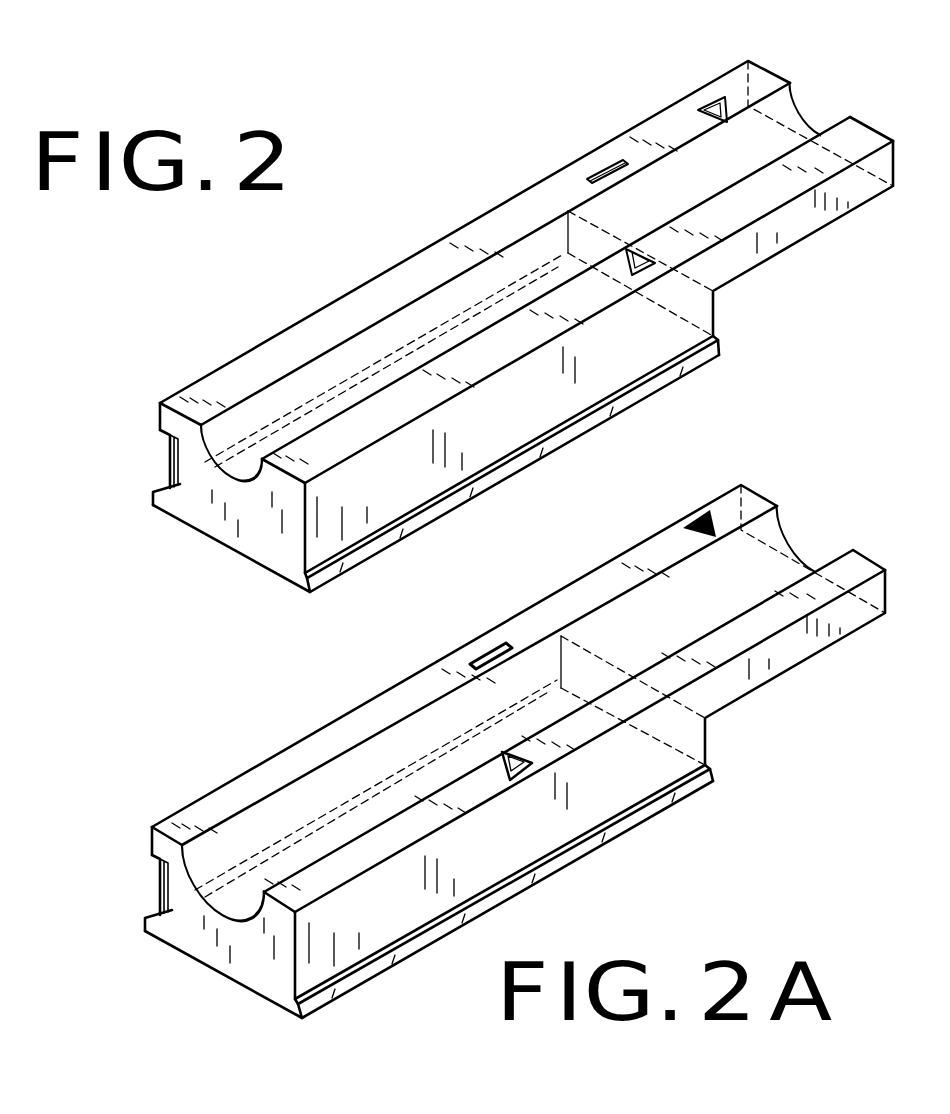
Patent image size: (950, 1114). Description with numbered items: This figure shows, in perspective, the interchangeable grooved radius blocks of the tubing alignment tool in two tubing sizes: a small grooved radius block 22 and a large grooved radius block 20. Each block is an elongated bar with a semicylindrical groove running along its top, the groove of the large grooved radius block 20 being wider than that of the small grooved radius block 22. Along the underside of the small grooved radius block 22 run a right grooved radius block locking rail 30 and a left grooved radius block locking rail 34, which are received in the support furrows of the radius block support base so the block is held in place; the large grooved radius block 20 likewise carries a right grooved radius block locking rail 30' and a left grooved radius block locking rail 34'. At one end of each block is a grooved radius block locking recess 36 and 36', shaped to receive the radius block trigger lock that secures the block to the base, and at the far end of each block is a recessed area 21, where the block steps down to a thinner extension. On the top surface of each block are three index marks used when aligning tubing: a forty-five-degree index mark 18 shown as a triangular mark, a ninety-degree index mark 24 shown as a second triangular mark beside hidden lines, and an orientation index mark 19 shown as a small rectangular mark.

In FIG. 2, the 45-degree index mark 18 is at (702, 100).
In FIG. 2A, the 45-degree index mark 18 is at (700, 518).
In FIG. 2, the orientation index mark 19 is at (614, 160).
In FIG. 2A, the orientation index mark 19 is at (486, 644).
In FIG. 2A, the large grooved radius block 20 is at (796, 560).
In FIG. 2, the recessed area 21 is at (802, 243).
In FIG. 2A, the recessed area 21 is at (818, 650).
In FIG. 2, the small grooved radius block 22 is at (804, 131).
In FIG. 2, the 90-degree index mark 24 is at (643, 268).
In FIG. 2A, the 90-degree index mark 24 is at (575, 750).
In FIG. 2, the right grooved radius block locking rail 30 is at (436, 503).
In FIG. 2A, the right grooved radius block locking rail 30' is at (429, 919).
In FIG. 2, the left grooved radius block locking rail 34 is at (110, 500).
In FIG. 2A, the left grooved radius block locking rail 34' is at (93, 935).
In FIG. 2, the radius block locking recess 36 is at (123, 440).
In FIG. 2A, the grooved radius block locking recess 36' is at (106, 870).